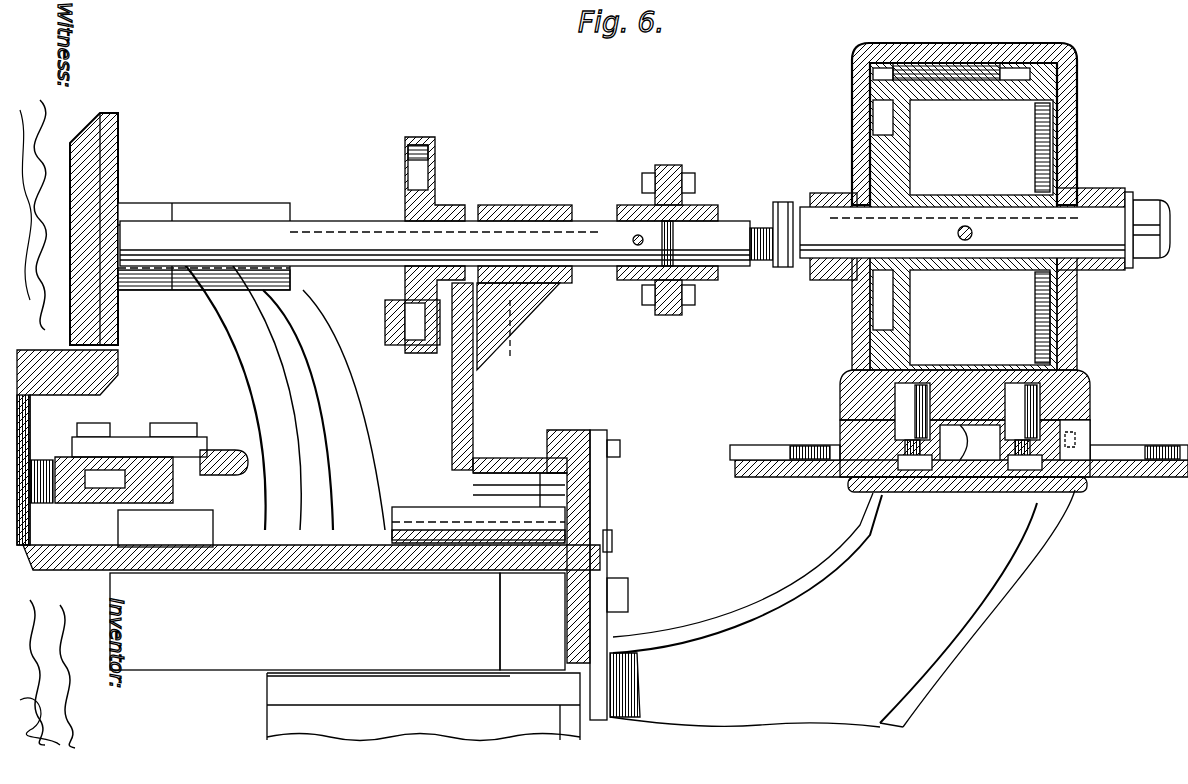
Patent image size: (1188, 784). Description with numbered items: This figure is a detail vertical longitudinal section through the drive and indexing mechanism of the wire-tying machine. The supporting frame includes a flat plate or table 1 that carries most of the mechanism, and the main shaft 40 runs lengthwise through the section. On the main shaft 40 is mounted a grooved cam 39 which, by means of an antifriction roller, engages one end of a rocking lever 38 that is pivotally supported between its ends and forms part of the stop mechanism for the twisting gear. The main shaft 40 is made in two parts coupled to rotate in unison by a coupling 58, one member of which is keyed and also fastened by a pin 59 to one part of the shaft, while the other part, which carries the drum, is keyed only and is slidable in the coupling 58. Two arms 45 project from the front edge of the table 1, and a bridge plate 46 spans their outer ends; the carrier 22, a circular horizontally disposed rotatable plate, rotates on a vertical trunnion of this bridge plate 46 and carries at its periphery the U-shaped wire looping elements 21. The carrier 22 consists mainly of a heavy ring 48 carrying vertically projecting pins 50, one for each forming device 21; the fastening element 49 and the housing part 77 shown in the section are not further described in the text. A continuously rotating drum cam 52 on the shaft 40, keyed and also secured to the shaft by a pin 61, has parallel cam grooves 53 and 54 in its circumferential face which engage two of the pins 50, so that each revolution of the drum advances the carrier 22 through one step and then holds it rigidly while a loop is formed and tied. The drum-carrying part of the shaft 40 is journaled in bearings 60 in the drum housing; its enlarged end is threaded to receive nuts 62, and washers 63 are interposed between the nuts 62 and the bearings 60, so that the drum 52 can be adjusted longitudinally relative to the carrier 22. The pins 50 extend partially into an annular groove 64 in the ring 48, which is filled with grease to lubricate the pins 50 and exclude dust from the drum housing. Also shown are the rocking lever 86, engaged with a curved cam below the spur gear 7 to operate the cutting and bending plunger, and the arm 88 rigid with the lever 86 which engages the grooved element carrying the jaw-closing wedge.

The flat plate or table 1 is at (460, 555).
The spur gear 7 is at (37, 470).
The wire looping elements 21 is at (745, 452).
The carrier 22 is at (1082, 422).
The rocking lever 38 is at (385, 320).
The cam 39 is at (415, 172).
The main shaft 40 is at (327, 235).
The arms 45 is at (676, 630).
The bridge plate 46 is at (1050, 495).
The heavy ring 48 is at (1000, 472).
The nut 49 is at (912, 472).
The pins 50 is at (905, 403).
The cam 52 is at (880, 68).
The cam groove 53 is at (912, 80).
The cam groove 54 is at (1025, 68).
The coupling 58 is at (660, 167).
The pin 59 is at (625, 258).
The bearings 60 is at (1083, 195).
The pin 61 is at (965, 250).
The nuts 62 is at (780, 210).
The washers 63 is at (1129, 195).
The annular groove 64 is at (960, 472).
The housing wall 77 is at (860, 108).
The rocking lever 86 is at (410, 515).
The arm 88 is at (228, 460).